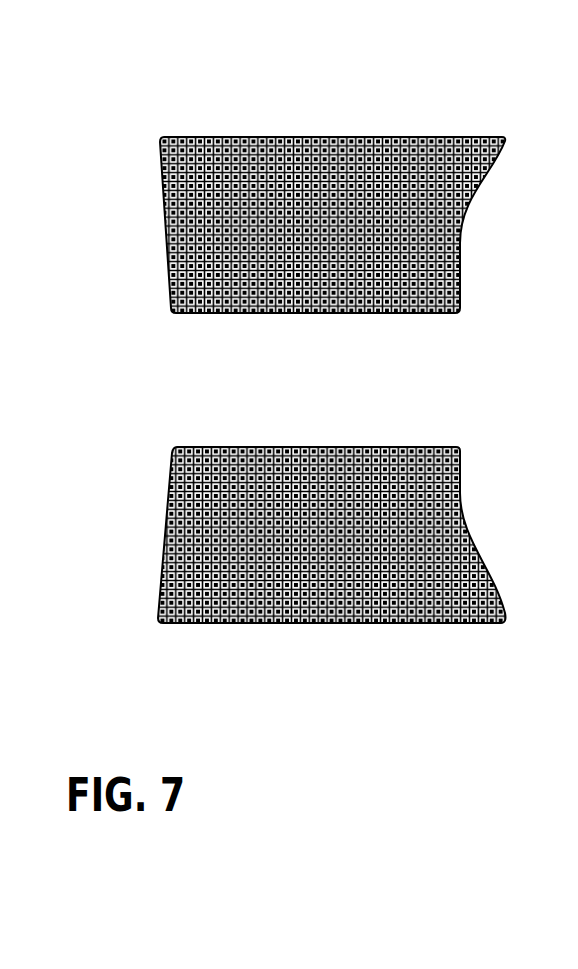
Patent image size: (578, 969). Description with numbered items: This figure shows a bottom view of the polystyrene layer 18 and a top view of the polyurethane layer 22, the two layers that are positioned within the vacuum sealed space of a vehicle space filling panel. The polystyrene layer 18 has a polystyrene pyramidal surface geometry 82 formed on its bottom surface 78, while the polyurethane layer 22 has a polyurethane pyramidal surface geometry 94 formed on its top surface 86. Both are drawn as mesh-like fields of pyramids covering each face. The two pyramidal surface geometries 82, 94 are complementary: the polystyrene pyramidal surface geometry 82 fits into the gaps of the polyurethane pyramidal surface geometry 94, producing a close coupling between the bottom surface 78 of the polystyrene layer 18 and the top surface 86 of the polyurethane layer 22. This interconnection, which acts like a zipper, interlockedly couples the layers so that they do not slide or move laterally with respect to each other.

The polystyrene layer 18 is at (322, 105).
The bottom surface 78 is at (262, 178).
The polystyrene pyramidal surface geometry 82 is at (312, 175).
The polyurethane layer 22 is at (150, 436).
The polyurethane pyramidal surface geometry 94 is at (243, 502).
The top surface 86 is at (187, 518).